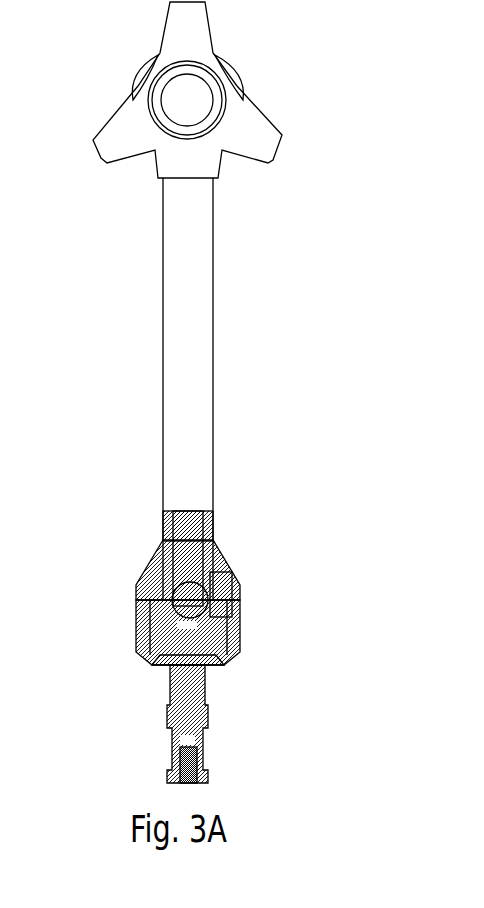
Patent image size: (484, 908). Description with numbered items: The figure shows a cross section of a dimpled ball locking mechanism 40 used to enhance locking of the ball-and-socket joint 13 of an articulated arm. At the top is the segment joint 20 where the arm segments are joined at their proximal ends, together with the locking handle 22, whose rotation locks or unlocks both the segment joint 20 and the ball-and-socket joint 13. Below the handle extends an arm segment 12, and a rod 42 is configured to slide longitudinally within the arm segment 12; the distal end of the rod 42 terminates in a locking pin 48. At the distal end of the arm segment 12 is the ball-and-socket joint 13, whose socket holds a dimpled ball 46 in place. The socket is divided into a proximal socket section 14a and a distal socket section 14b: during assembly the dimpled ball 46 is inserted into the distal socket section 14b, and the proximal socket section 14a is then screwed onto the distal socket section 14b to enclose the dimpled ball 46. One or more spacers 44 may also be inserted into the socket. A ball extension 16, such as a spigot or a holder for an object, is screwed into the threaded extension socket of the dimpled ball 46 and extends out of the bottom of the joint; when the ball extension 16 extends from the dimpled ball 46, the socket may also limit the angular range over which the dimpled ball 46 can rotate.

The segment joint 20 is at (137, 85).
The locking handle 22 is at (226, 101).
The arm segment 12 is at (215, 407).
The dimpled ball locking mechanism 40 is at (272, 481).
The rod 42 is at (172, 540).
The proximal socket section 14a is at (142, 583).
The distal socket section 14b is at (138, 652).
The spacer 44 is at (221, 584).
The locking pin 48 is at (185, 596).
The dimpled ball 46 is at (163, 658).
The ball-and-socket joint 13 is at (259, 681).
The ball extension 16 is at (208, 720).